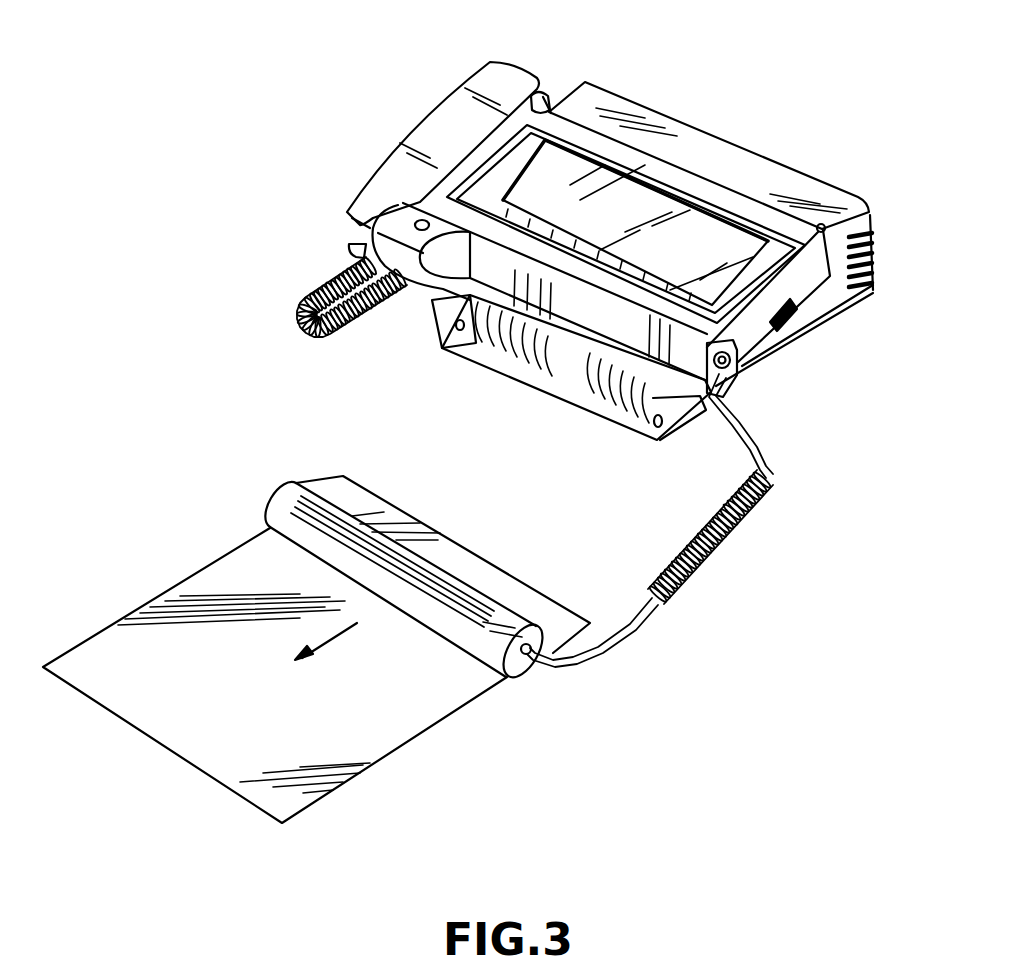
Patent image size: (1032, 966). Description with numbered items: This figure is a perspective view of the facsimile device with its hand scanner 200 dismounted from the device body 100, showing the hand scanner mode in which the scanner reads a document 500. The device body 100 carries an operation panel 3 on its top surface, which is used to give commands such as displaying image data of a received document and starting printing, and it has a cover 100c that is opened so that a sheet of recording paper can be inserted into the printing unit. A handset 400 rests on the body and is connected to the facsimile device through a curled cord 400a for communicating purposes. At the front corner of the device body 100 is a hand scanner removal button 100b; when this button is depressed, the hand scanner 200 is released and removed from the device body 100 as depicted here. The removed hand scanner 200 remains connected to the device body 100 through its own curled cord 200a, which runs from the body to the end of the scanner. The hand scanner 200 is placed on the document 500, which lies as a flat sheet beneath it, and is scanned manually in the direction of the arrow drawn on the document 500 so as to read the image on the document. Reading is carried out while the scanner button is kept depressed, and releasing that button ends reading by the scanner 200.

The device body 100 is at (801, 350).
The hand scanner removal button 100b is at (733, 365).
The cover 100c is at (694, 140).
The operation panel 3 is at (703, 242).
The handset 400 is at (497, 88).
The curled cord 400a is at (329, 336).
The hand scanner 200 is at (473, 607).
The curled cord 200a is at (733, 543).
The document 500 is at (371, 747).